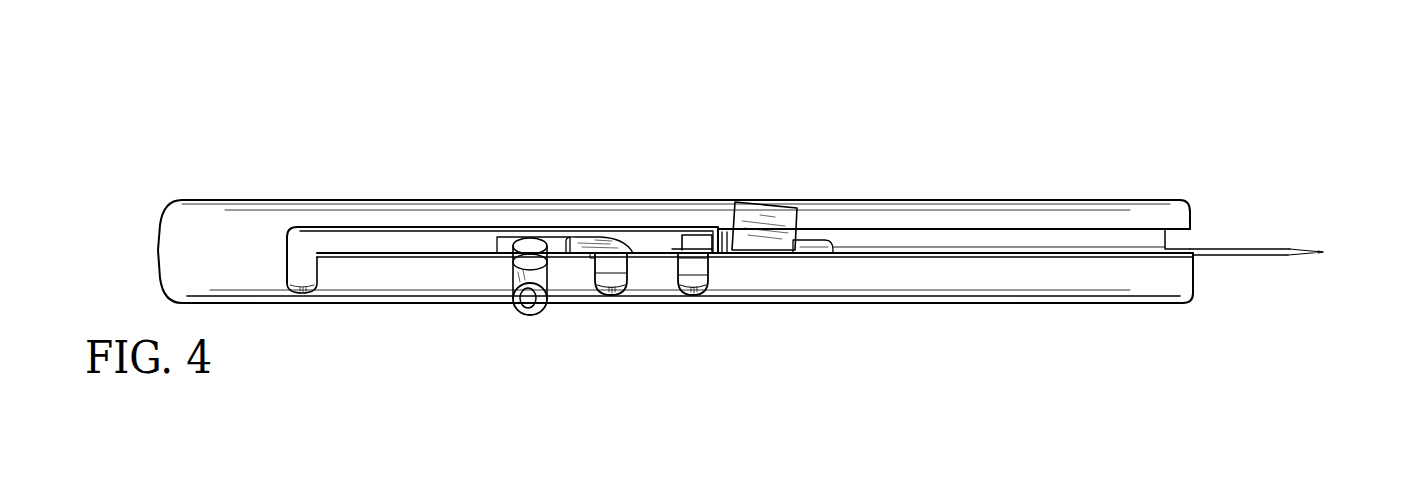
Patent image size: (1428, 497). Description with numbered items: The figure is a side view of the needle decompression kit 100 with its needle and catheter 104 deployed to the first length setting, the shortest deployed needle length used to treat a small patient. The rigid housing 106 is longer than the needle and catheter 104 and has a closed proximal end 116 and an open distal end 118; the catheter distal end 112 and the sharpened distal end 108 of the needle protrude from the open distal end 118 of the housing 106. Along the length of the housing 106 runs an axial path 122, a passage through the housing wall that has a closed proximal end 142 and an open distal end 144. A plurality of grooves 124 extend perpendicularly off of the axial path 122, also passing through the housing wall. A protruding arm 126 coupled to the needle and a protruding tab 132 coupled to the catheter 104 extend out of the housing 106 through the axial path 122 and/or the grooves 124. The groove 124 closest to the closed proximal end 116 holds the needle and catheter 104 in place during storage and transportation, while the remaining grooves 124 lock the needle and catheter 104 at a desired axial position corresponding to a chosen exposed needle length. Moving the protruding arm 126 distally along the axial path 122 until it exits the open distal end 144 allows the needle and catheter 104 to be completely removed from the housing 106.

The needle decompression kit 100 is at (360, 125).
The catheter 104 is at (1227, 253).
The housing 106 is at (1047, 207).
The sharpened distal end 108 is at (1325, 248).
The distal end 112 is at (1283, 258).
The closed proximal end 116 is at (158, 257).
The open distal end 118 is at (1183, 201).
The axial path 122 is at (945, 235).
The grooves 124 is at (302, 283).
The protruding arm 126 is at (540, 249).
The protruding tab 132 is at (767, 212).
The closed proximal end 142 is at (287, 240).
The open distal end 144 is at (1170, 237).